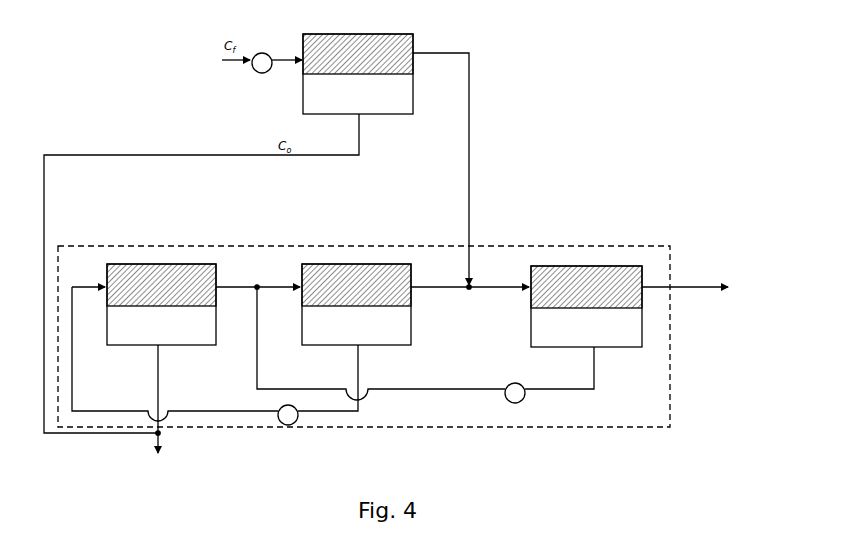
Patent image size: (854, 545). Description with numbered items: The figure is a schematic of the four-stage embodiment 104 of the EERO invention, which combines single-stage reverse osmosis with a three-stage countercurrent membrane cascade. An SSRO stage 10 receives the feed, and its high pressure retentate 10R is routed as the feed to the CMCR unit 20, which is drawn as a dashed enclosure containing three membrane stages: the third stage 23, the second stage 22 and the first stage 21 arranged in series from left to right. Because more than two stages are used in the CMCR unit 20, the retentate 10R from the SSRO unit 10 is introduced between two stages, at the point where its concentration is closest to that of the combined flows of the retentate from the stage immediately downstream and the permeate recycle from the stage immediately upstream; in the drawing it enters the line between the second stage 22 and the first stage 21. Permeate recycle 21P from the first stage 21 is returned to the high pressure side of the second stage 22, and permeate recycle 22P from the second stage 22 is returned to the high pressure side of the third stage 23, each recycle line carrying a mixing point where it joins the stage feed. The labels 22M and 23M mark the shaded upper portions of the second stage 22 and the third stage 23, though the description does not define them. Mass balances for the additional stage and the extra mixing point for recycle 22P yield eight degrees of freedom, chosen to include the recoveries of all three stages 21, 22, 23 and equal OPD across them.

The SSRO stage 10 is at (392, 34).
The high pressure retentate 10R is at (470, 124).
The four-stage embodiment 104 is at (594, 71).
The three-stage countercurrent membrane cascade (CMCR) unit 20 is at (468, 428).
The stage 1 21 is at (575, 265).
The stage 2 22 is at (370, 273).
The stage 3 23 is at (180, 273).
The stage 2 model 22M is at (393, 262).
The stage 3 model 23M is at (205, 262).
The permeate recycle from stage 1 21P is at (578, 396).
The permeate recycle from stage 2 22P is at (238, 413).